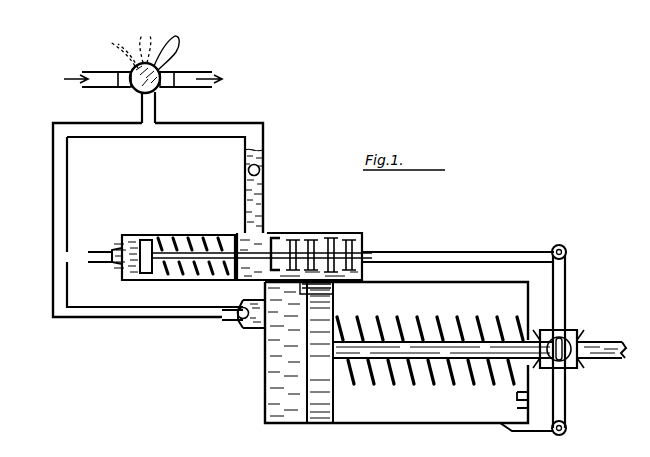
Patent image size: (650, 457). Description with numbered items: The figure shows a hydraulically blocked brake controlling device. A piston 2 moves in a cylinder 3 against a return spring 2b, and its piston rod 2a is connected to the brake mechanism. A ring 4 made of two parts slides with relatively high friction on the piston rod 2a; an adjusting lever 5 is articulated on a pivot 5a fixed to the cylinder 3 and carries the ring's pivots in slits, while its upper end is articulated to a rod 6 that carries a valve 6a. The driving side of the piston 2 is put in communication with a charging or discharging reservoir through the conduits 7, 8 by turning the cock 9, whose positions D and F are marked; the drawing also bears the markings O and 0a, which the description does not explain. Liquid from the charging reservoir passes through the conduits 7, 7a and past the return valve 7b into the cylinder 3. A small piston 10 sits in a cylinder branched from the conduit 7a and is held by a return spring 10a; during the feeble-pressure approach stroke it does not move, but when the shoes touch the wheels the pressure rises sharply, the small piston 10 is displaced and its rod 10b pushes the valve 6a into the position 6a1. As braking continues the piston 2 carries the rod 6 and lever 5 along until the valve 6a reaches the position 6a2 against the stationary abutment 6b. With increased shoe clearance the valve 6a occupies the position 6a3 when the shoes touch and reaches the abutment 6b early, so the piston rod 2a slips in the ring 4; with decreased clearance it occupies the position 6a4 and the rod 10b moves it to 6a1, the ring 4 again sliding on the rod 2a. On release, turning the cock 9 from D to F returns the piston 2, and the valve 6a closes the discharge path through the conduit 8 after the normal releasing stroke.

The conduit 7 is at (106, 84).
The conduit 8 is at (184, 87).
The cock 9 is at (166, 68).
The spray direction O is at (145, 39).
The position F is at (119, 50).
The position D is at (171, 45).
The conduit 7a is at (67, 182).
The return valve 7b is at (240, 326).
The small piston 10 is at (150, 236).
The return spring 10a is at (190, 238).
The rod 10b is at (190, 262).
The cup member 0a is at (276, 236).
The valve 6a is at (300, 240).
The position of valve 6a1 is at (338, 240).
The position of valve 6a2 is at (362, 270).
The position of valve 6a3 is at (352, 244).
The position of valve 6a4 is at (318, 242).
The stationary abutment 6b is at (370, 252).
The rod 6 is at (462, 253).
The adjusting lever 5 is at (565, 280).
The pivot 5a is at (568, 426).
The ring 4 is at (580, 336).
The cylinder 3 is at (292, 422).
The piston 2 is at (320, 423).
The piston rod 2a is at (410, 355).
The return spring 2b is at (386, 382).